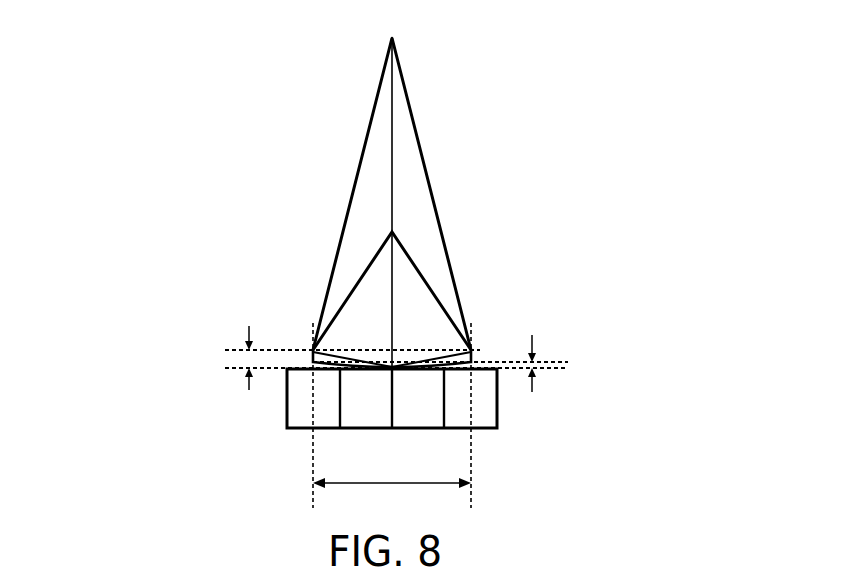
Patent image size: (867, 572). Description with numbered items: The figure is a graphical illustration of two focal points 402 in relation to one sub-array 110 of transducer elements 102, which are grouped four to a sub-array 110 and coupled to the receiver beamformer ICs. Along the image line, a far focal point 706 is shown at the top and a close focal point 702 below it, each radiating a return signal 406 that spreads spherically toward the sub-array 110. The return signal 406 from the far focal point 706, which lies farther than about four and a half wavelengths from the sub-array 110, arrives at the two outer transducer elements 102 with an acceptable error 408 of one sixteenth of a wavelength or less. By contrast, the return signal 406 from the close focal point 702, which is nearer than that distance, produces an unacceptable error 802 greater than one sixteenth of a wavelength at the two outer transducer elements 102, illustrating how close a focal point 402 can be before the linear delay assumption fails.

The far focal point 706 is at (392, 38).
The focal point 402 is at (420, 37).
The close focal point 702 is at (392, 232).
The return signal 406 is at (494, 338).
The unacceptable error 802 is at (206, 360).
The error 408 is at (583, 362).
The transducer elements 102 is at (298, 400).
The sub-array 110 is at (528, 409).